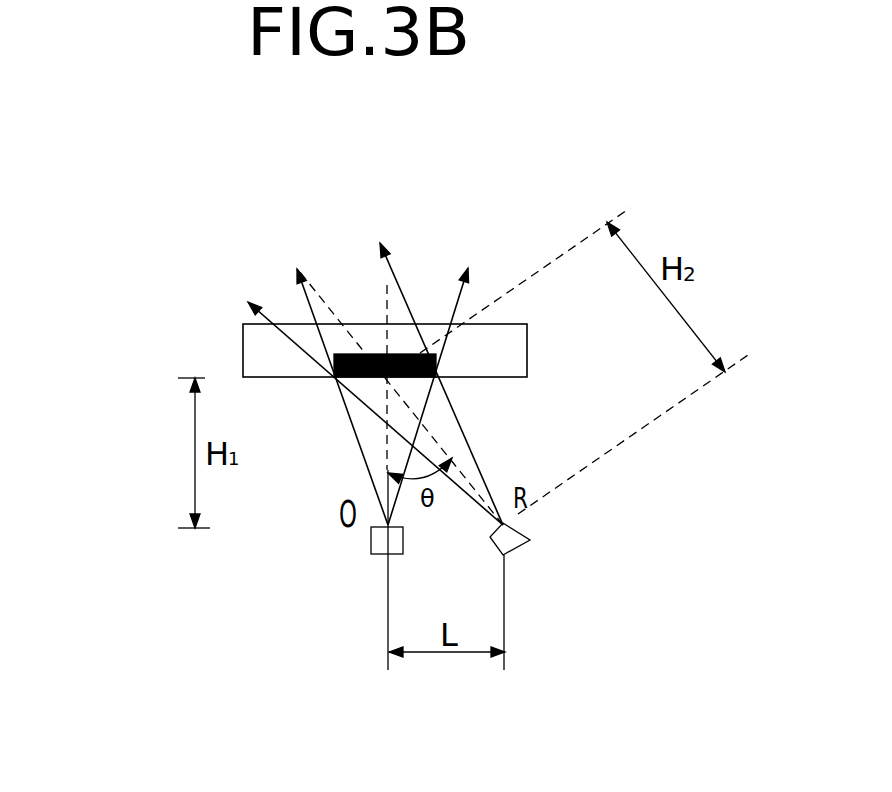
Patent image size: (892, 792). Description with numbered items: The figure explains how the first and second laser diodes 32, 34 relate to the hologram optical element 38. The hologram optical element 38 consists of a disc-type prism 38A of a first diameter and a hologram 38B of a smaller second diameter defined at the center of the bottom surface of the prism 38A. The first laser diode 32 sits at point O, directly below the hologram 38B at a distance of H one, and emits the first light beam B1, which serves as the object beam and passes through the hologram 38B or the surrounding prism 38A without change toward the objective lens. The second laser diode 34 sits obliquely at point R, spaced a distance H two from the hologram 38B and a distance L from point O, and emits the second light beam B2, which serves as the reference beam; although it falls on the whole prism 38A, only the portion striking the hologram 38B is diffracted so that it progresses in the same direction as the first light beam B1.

The first laser diode 32 is at (370, 543).
The second laser diode 34 is at (530, 540).
The hologram optical element 38 is at (285, 324).
The disc-type prism 38A is at (247, 345).
The hologram 38B is at (333, 367).
The first light beam B1 is at (314, 318).
The second light beam B2 is at (382, 265).